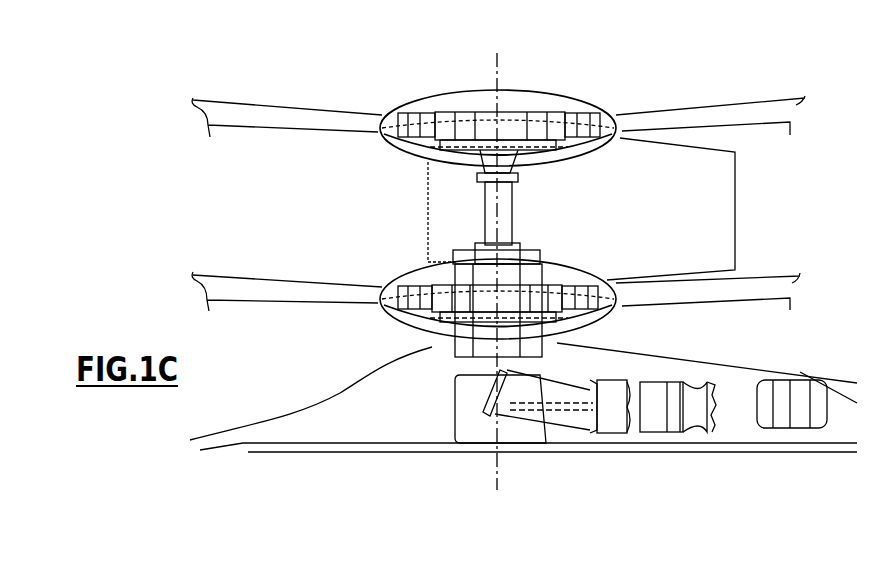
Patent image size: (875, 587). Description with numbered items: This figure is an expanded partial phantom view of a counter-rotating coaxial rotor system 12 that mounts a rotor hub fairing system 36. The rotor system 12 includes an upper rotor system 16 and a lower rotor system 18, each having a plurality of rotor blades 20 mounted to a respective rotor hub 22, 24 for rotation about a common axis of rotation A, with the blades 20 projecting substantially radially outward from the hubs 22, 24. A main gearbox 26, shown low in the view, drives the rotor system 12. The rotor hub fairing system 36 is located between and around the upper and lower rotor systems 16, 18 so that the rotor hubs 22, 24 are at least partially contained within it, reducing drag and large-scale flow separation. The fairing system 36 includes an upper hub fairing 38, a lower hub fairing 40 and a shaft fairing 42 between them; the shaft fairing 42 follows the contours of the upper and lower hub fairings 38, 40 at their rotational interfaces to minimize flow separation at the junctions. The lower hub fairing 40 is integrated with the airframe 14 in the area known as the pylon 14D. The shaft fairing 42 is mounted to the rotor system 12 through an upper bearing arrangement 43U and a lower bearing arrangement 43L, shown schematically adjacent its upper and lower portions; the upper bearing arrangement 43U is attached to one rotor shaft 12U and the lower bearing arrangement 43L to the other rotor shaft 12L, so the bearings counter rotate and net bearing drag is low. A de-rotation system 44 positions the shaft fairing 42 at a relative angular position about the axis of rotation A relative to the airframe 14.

The axis of rotation A is at (500, 68).
The dual, counter-rotating, coaxial rotor system 12 is at (450, 281).
The rotor shaft 12U is at (514, 210).
The rotor shaft 12L is at (463, 366).
The airframe 14 is at (523, 418).
The pylon 14D is at (371, 381).
The upper rotor system 16 is at (498, 105).
The lower rotor system 18 is at (496, 287).
The rotor blades 20 is at (738, 121).
The rotor hub 22 is at (513, 128).
The rotor hub 24 is at (656, 378).
The main gearbox 26 is at (500, 406).
The rotor hub fairing system 36 is at (498, 92).
The upper hub fairing 38 is at (498, 105).
The lower hub fairing 40 is at (392, 282).
The shaft fairing 42 is at (714, 212).
The upper bearing arrangement 43U is at (521, 179).
The lower bearing arrangement 43L is at (524, 246).
The de-rotation system 44 is at (446, 259).